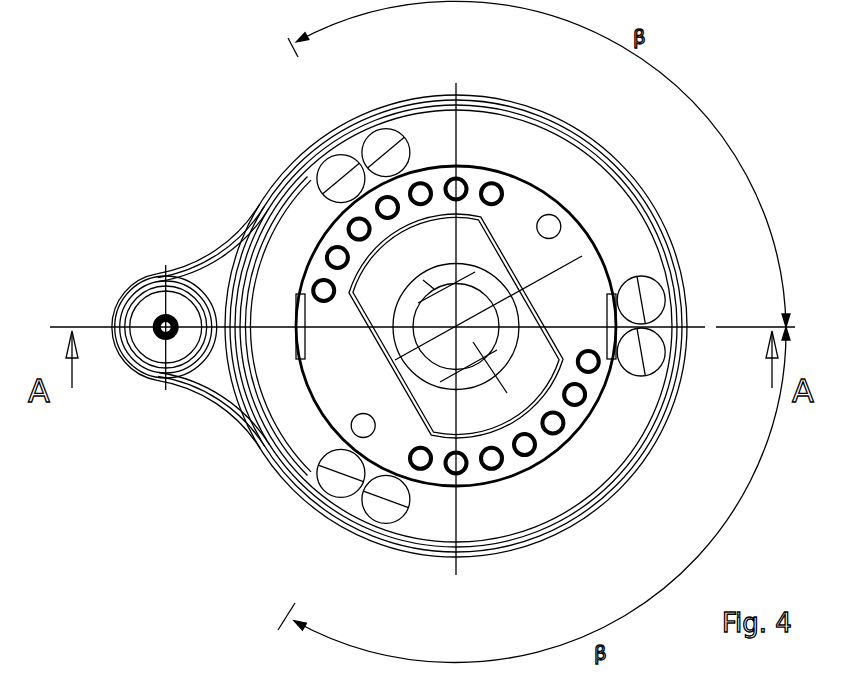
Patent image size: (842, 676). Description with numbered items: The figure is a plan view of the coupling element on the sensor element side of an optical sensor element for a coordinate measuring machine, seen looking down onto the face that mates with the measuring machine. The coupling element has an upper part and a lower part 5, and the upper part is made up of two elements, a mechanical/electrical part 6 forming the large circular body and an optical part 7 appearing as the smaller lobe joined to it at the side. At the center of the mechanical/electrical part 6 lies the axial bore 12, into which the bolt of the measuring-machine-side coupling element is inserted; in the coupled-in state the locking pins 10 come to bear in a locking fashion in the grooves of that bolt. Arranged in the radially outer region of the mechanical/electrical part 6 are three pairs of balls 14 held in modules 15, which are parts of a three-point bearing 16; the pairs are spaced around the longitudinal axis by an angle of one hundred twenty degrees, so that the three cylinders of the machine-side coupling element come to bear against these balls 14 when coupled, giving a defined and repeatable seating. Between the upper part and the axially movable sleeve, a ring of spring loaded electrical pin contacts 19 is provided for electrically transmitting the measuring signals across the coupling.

The lower part 5 is at (623, 163).
The mechanical/electrical part 6 is at (548, 178).
The optical part 7 is at (143, 307).
The locking pins 10 is at (303, 378).
The axial bore 12 is at (397, 376).
The balls 14 is at (398, 165).
The modules 15 is at (352, 148).
The three-point bearing 16 is at (312, 186).
The spring loaded electrical pin contacts 19 is at (485, 186).